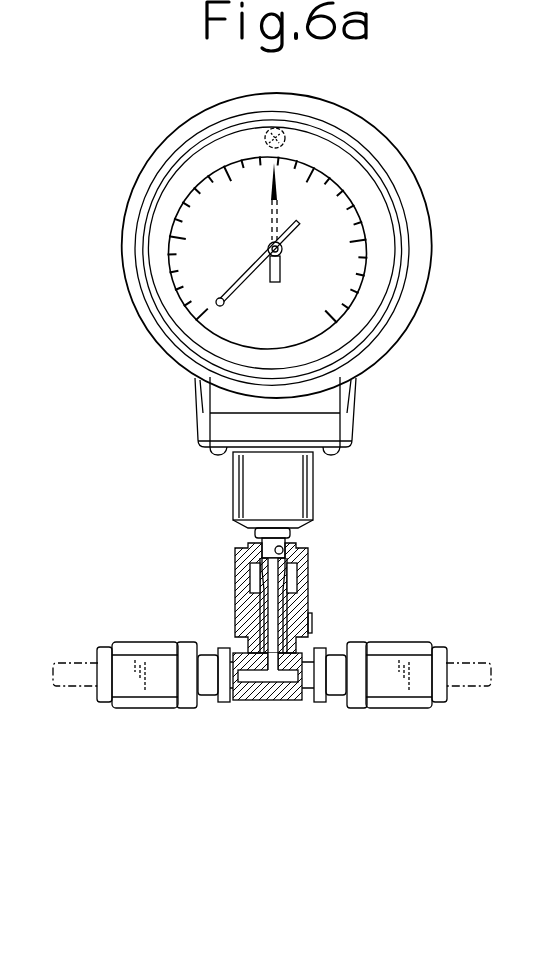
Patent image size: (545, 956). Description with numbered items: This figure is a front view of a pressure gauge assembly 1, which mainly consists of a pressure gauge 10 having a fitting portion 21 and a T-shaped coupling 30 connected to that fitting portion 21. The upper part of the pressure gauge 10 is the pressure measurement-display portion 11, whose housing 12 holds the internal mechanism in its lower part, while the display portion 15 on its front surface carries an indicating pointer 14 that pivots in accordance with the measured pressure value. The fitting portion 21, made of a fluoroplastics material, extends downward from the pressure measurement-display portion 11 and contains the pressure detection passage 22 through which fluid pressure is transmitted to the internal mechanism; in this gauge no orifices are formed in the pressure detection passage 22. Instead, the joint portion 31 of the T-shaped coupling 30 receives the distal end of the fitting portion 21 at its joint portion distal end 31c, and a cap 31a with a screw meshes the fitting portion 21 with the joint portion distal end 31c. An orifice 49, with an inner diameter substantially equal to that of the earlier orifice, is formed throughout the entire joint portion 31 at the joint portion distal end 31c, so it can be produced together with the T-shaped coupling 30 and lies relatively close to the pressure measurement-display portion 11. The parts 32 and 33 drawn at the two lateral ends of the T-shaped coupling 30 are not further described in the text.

The pressure gauge assembly 1 is at (462, 448).
The pressure gauge 10 is at (418, 145).
The pressure measurement-display portion 11 is at (382, 389).
The housing 12 is at (423, 300).
The indicating pointer 14 is at (250, 290).
The display portion 15 is at (323, 270).
The fitting portion 21 is at (317, 527).
The pressure detection passage 22 is at (300, 551).
The T-shaped coupling 30 is at (263, 722).
The joint portion 31 is at (332, 576).
The cap with a screw 31a is at (312, 623).
The joint portion distal end 31c is at (253, 592).
The left pipe connector 32 is at (146, 724).
The right pipe connector 33 is at (395, 724).
The orifice 49 is at (262, 580).